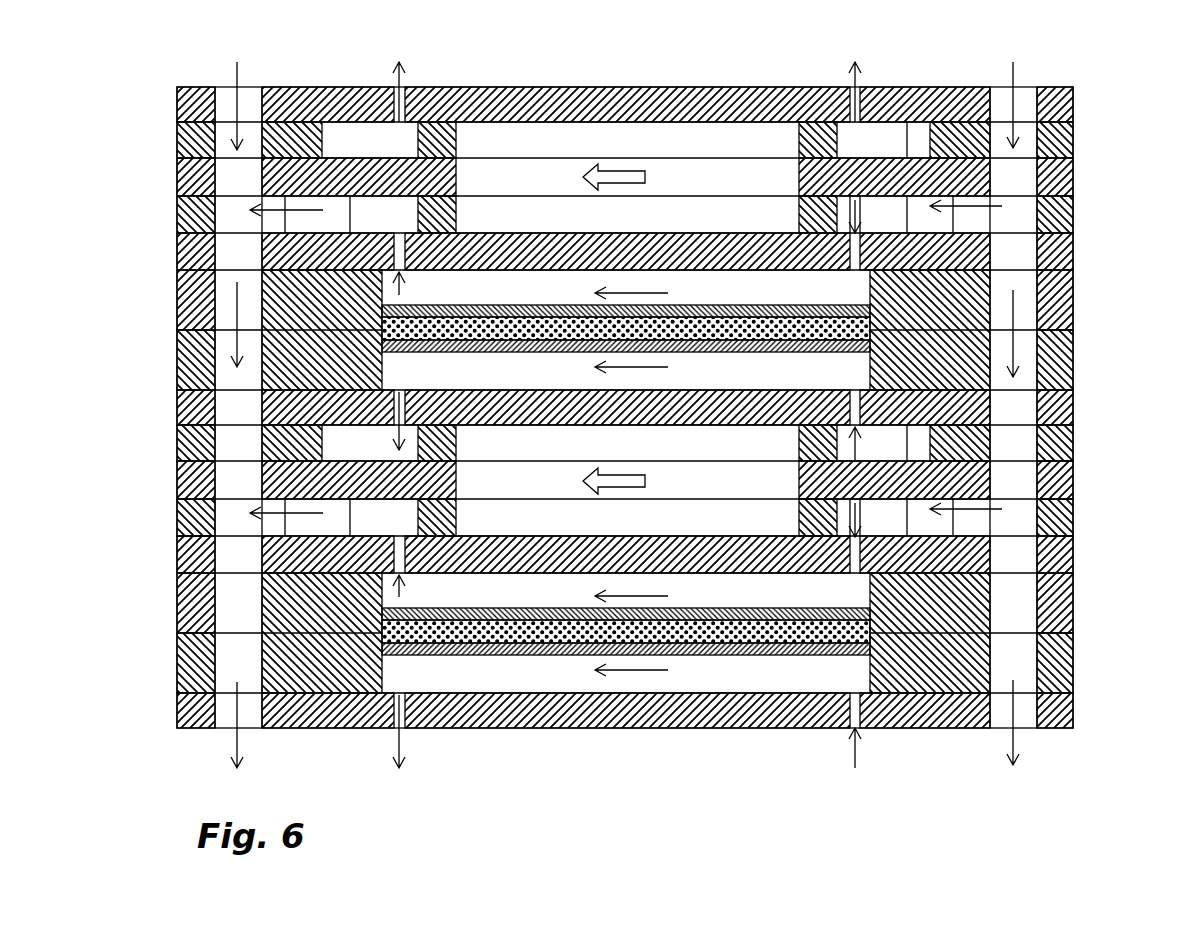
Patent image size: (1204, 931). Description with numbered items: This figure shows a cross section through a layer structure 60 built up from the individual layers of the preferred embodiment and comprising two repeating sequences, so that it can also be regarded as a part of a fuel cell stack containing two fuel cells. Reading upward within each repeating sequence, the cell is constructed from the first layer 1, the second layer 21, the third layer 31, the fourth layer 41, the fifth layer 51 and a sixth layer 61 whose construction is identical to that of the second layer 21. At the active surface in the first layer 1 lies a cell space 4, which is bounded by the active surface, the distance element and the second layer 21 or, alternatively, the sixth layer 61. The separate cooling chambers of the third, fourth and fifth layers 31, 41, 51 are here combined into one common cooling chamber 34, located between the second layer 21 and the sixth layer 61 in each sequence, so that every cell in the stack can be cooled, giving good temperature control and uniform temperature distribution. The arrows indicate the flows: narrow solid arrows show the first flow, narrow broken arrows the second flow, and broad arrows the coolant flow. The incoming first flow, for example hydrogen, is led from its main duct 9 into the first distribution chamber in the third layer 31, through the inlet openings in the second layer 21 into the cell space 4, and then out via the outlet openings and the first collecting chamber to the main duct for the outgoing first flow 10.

The layer structure 60 is at (1073, 752).
The sixth layer 61 is at (1073, 98).
The fifth layer 51 is at (1073, 133).
The fourth layer 41 is at (1073, 169).
The third layer 31 is at (1073, 207).
The second layer 21 is at (1073, 243).
The first layer 1 is at (1073, 328).
The cell space 4 is at (440, 667).
The common cooling chamber 34 is at (563, 183).
The main duct for the outgoing first flow 10 is at (228, 112).
The main duct for the incoming first flow 9 is at (1029, 96).